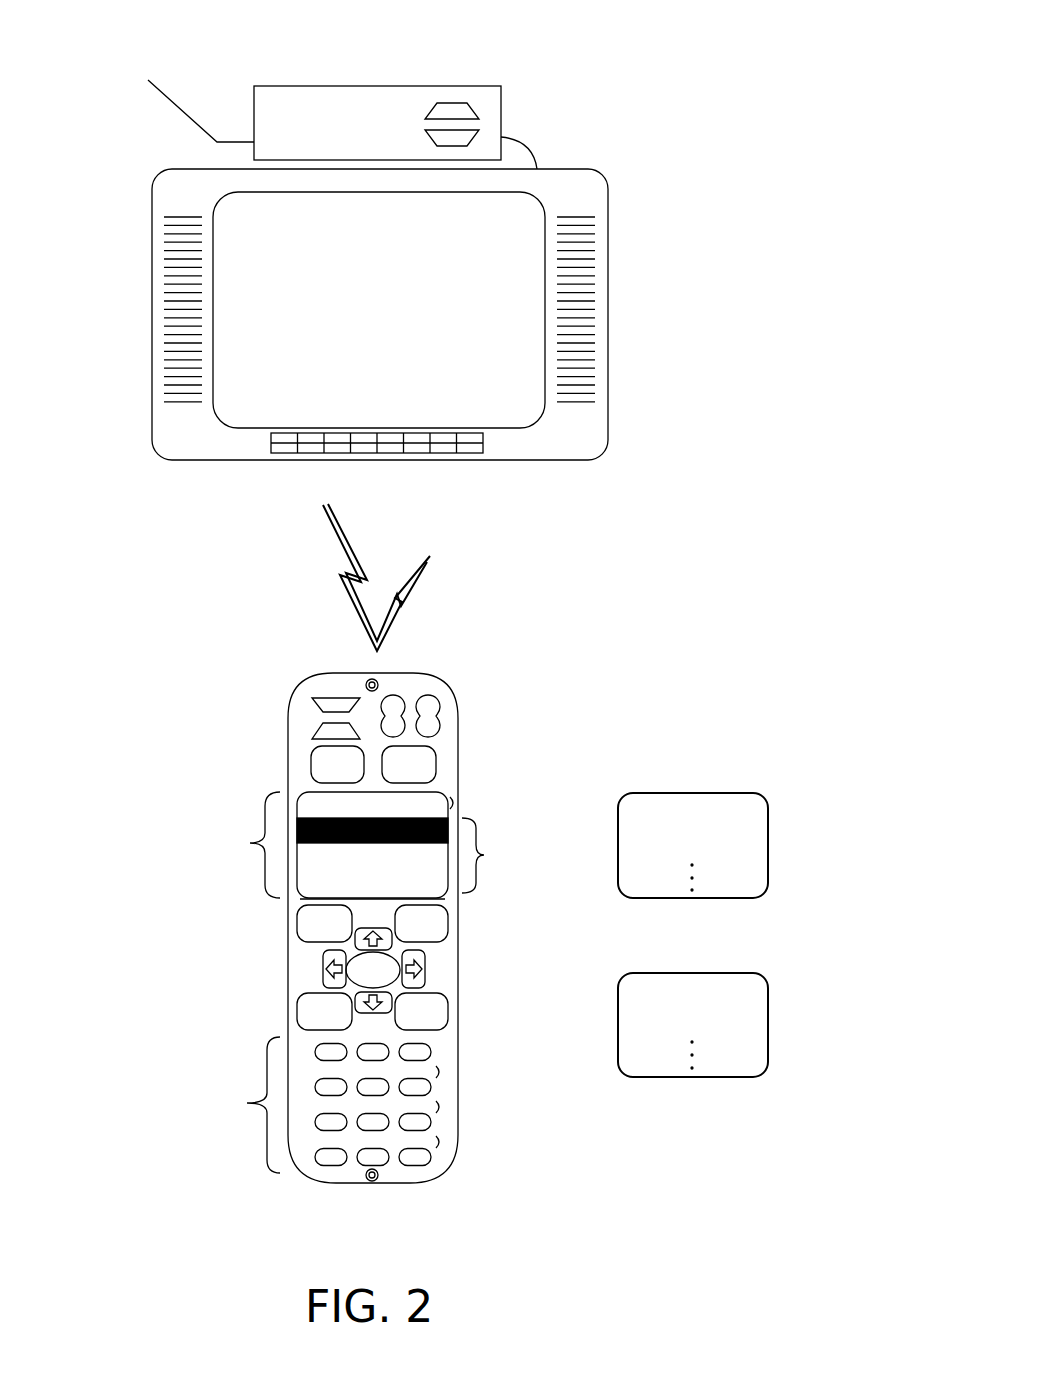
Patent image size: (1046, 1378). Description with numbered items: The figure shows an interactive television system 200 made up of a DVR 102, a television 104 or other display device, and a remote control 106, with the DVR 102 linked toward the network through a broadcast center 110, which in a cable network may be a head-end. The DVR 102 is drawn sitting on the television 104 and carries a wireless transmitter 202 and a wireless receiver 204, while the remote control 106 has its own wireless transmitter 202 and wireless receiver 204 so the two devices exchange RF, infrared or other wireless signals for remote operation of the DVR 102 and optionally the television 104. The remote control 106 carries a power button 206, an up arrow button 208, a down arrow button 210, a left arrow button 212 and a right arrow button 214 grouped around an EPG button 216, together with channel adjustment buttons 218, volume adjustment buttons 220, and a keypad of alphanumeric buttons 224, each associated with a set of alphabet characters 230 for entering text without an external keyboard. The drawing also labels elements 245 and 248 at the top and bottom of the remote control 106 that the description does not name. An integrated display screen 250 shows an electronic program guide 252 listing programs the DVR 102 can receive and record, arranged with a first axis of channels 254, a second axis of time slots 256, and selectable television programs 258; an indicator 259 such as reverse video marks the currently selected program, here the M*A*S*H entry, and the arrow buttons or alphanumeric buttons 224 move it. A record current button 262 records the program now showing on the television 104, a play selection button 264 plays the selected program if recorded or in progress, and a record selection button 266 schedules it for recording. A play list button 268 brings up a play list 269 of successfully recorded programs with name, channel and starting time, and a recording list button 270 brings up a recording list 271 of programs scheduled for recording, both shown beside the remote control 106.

The interactive television system 200 is at (766, 15).
The broadcast center 110 is at (179, 93).
The DVR 102 is at (395, 127).
The television 104 is at (380, 314).
The remote control 106 is at (311, 651).
The wireless transmitter 202 is at (447, 104).
The wireless receiver 204 is at (478, 137).
The power button 206 is at (311, 766).
The up arrow button 208 is at (372, 927).
The down arrow button 210 is at (374, 1013).
The left arrow button 212 is at (323, 968).
The right arrow button 214 is at (425, 968).
The EPG button 216 is at (397, 958).
The channel adjustment buttons 218 is at (400, 703).
The volume adjustment buttons 220 is at (438, 728).
The alphanumeric buttons 224 is at (262, 1070).
The alphabet characters 230 is at (440, 1072).
The infrared transmitter 245 is at (380, 683).
The infrared receiver 248 is at (378, 1174).
The display screen 250 is at (458, 795).
The electronic program guide 252 is at (249, 842).
The channels 254 is at (330, 899).
The time slots 256 is at (455, 803).
The television programs 258 is at (486, 855).
The indicator 259 is at (280, 793).
The record current button 262 is at (436, 766).
The play selection button 264 is at (297, 920).
The record selection button 266 is at (448, 920).
The play list button 268 is at (297, 1005).
The recording list button 270 is at (448, 1012).
The play list 269 is at (695, 793).
The recording list 271 is at (693, 973).